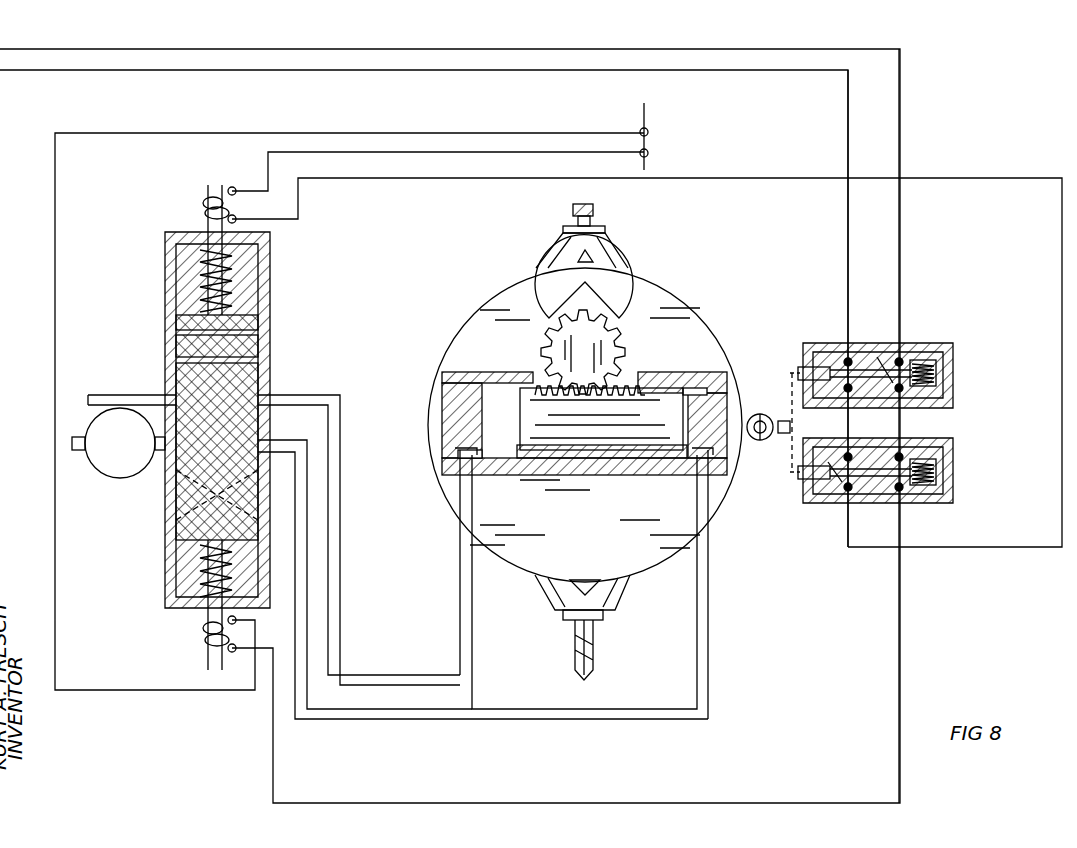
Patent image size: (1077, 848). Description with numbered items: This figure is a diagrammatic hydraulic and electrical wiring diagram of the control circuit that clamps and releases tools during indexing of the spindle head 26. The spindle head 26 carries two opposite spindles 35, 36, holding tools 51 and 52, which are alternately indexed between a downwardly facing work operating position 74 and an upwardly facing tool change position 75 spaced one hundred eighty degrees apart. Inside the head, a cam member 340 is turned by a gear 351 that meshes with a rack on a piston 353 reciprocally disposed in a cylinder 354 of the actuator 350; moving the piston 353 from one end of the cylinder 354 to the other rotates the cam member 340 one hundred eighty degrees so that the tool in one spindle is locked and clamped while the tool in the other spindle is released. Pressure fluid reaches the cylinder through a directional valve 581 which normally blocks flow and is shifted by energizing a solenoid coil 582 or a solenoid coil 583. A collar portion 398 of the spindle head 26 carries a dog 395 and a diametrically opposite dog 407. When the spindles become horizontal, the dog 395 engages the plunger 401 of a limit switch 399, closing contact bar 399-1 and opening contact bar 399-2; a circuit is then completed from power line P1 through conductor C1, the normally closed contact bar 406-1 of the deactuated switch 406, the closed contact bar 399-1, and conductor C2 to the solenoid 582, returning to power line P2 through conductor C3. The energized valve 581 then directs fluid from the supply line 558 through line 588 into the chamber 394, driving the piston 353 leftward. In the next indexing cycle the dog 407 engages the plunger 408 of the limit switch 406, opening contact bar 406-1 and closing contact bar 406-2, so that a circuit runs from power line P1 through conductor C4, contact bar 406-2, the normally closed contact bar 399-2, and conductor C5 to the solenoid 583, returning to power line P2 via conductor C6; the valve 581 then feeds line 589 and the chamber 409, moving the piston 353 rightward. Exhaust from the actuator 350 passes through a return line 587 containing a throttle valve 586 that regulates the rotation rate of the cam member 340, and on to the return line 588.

The conductor C4 is at (412, 43).
The conductor C1 is at (316, 70).
The conductor C2 is at (1062, 207).
The conductor C3 is at (262, 153).
The conductor C5 is at (658, 803).
The conductor C6 is at (55, 262).
The power line P1 is at (8, 97).
The power line P2 is at (650, 115).
The spindle head 26 is at (712, 312).
The spindle 35 is at (605, 618).
The spindle 36 is at (612, 230).
The tool 51 is at (594, 656).
The tool 52 is at (572, 208).
The work operating position 74 is at (583, 687).
The tool change position 75 is at (583, 186).
The cam member 340 is at (640, 302).
The actuator 350 is at (611, 450).
The gear 351 is at (605, 355).
The piston 353 is at (645, 450).
The cylinder 354 is at (500, 380).
The chamber 394 is at (700, 378).
The dog 395 is at (578, 258).
The collar portion 398 is at (490, 300).
The limit switch 399 is at (962, 502).
The contact bar 399-1 is at (838, 480).
The contact bar 399-2 is at (905, 455).
The plunger 401 is at (768, 442).
The limit switch 406 is at (965, 350).
The contact bar 406-1 is at (852, 360).
The contact bar 406-2 is at (905, 348).
The dog 407 is at (603, 594).
The plunger 408 is at (760, 412).
The chamber 409 is at (505, 450).
The supply line 558 is at (140, 392).
The directional valve 581 is at (155, 595).
The solenoid coil 582 is at (204, 203).
The solenoid coil 583 is at (202, 640).
The throttle valve 586 is at (120, 478).
The return line 587 is at (72, 443).
The line 588 is at (490, 715).
The line 589 is at (340, 652).